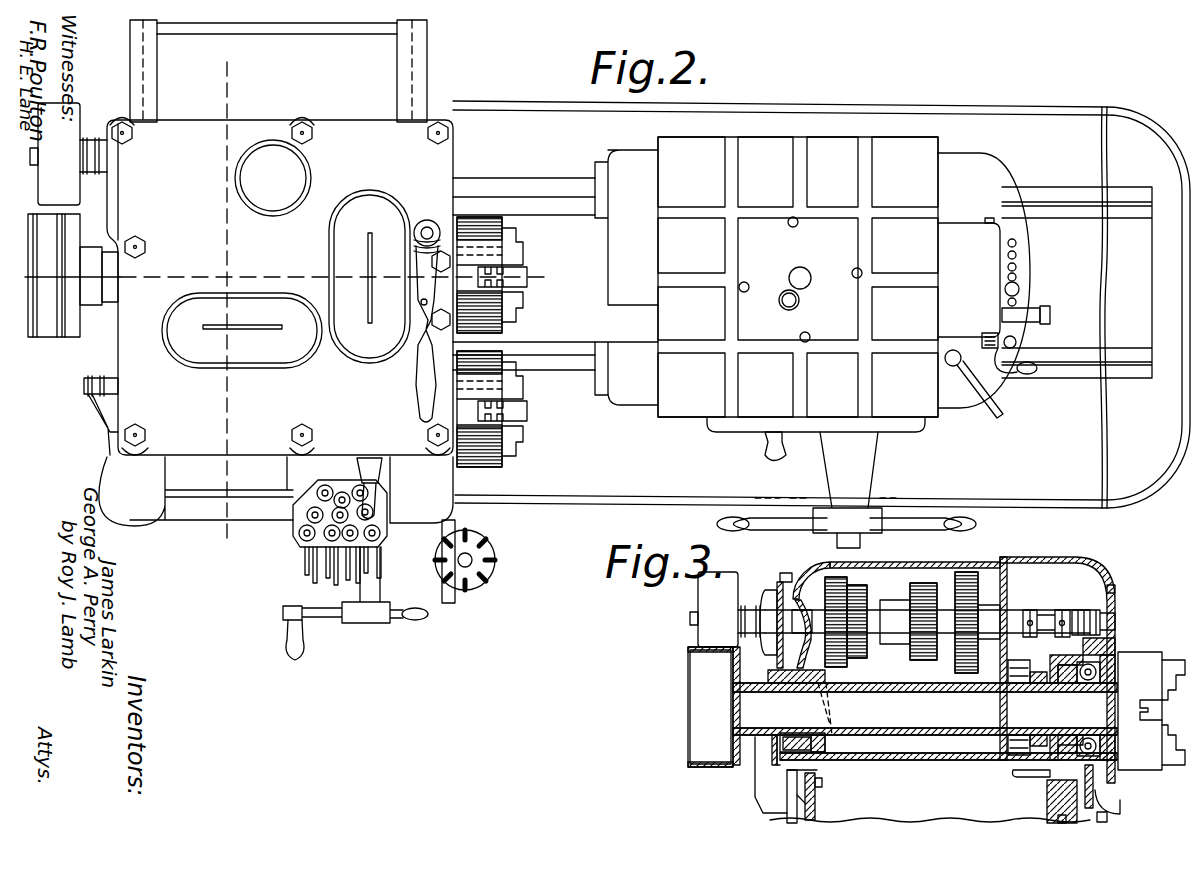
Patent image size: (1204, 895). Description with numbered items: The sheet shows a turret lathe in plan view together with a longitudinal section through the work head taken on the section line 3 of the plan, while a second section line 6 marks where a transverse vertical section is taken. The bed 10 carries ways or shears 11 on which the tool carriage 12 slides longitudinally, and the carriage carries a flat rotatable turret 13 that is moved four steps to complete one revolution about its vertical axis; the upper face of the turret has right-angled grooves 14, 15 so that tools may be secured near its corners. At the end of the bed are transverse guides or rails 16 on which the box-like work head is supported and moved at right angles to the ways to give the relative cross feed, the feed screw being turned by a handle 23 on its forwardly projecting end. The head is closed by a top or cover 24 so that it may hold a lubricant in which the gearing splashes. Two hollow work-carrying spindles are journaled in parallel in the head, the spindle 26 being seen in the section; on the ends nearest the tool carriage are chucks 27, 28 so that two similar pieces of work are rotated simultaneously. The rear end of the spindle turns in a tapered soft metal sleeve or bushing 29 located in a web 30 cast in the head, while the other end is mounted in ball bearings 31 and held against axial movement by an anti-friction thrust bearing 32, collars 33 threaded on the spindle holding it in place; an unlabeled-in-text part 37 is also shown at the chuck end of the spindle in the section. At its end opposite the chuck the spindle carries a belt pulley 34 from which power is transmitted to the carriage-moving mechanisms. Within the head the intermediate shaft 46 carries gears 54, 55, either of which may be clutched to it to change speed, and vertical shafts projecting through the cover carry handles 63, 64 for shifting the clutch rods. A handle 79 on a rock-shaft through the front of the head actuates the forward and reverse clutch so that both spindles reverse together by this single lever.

In FIG. 2, the section line 3— 3 is at (288, 277).
In FIG. 2, the section line 6— 6 is at (228, 306).
In FIG. 2, the bed 10 is at (556, 499).
In FIG. 2, the ways or shears 11 is at (541, 196).
In FIG. 2, the tool carriage 12 is at (988, 181).
In FIG. 2, the turret 13 is at (908, 150).
In FIG. 2, the right-angled grooves 14 is at (800, 182).
In FIG. 2, the right-angled grooves 15 is at (687, 280).
In FIG. 2, the transverse guides or rails 16 is at (138, 87).
In FIG. 2, the handle 23 is at (333, 612).
In FIG. 2, the top or cover 24 is at (443, 166).
In FIG. 3, the work-carrying spindle 26 is at (963, 685).
In FIG. 2, the chuck 27 is at (503, 464).
In FIG. 2, the chuck 28 is at (503, 262).
In FIG. 3, the chuck 28 is at (1141, 665).
In FIG. 3, the tapered soft metal sleeve or bushing 29 is at (793, 740).
In FIG. 3, the web 30 is at (781, 670).
In FIG. 3, the ball bearings 31 is at (1095, 688).
In FIG. 3, the anti-friction thrust bearing 32 is at (1062, 688).
In FIG. 3, the collars 33 is at (1024, 688).
In FIG. 2, the belt pulley 34 is at (48, 326).
In FIG. 3, the belt pulley 34 is at (705, 770).
In FIG. 3, the spindle flange 37 is at (1115, 645).
In FIG. 3, the intermediate shaft 46 is at (886, 614).
In FIG. 3, the gear 54 is at (968, 577).
In FIG. 3, the gear 55 is at (1000, 567).
In FIG. 2, the handle 63 is at (407, 245).
In FIG. 2, the handle 64 is at (424, 372).
In FIG. 2, the handle or lever 79 is at (370, 500).